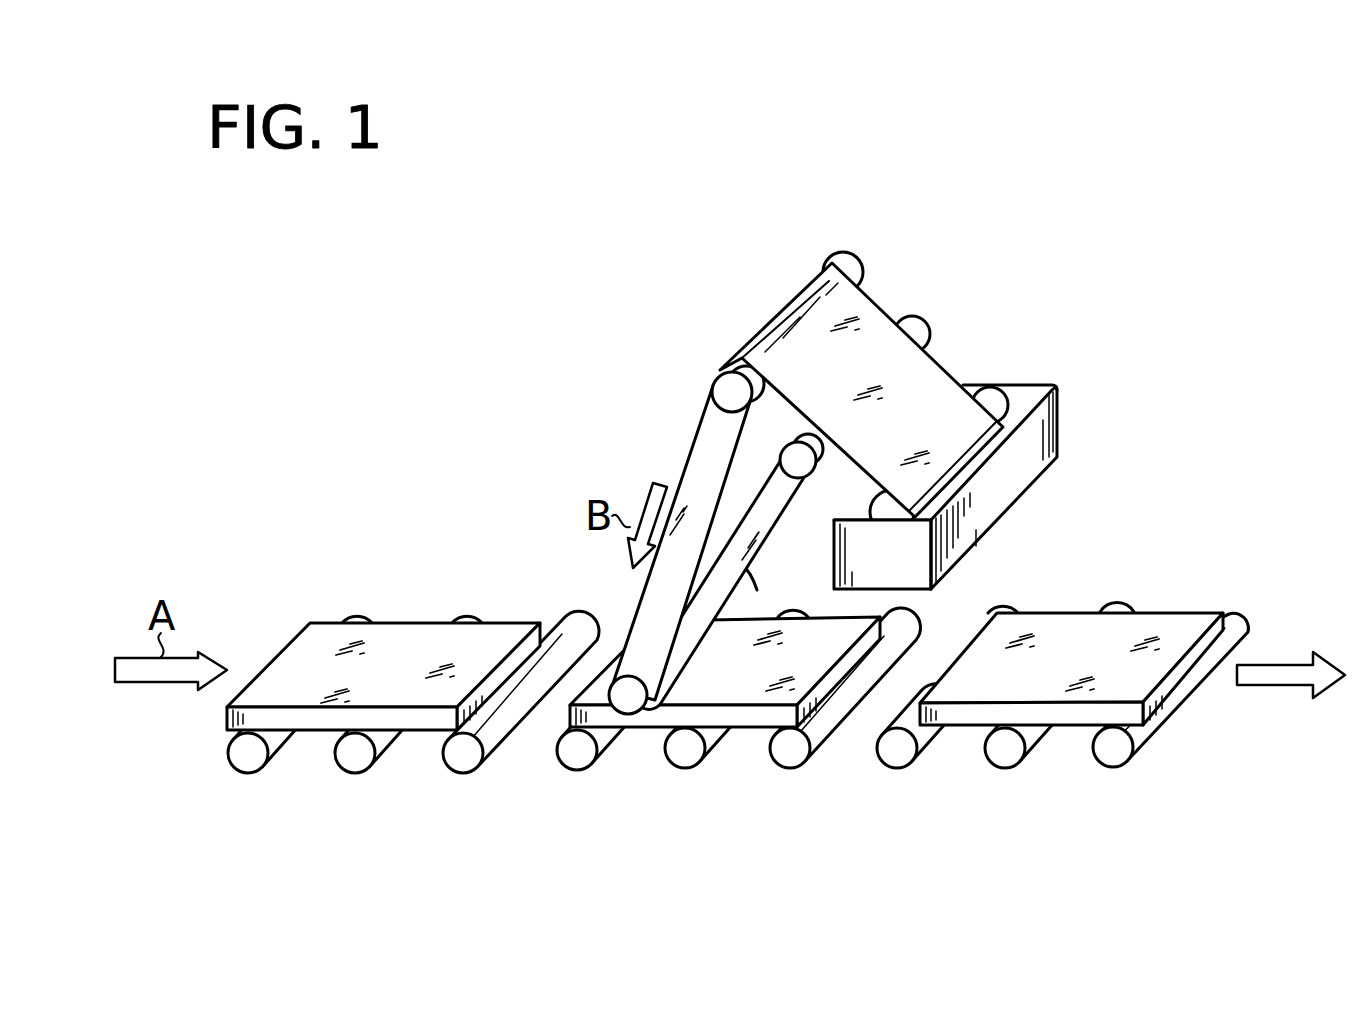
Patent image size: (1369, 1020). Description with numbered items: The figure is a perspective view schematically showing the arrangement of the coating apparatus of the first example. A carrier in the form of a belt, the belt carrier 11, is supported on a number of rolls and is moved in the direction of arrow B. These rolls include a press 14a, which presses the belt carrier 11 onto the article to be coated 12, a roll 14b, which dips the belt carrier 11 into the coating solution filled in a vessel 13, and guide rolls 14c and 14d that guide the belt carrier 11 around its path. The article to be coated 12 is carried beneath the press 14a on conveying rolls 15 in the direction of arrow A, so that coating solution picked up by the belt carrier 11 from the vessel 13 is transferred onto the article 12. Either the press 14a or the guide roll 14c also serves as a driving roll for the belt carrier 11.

The belt carrier 11 is at (657, 606).
The article to be coated 12 is at (313, 655).
The vessel 13 is at (1034, 422).
The press 14a is at (632, 703).
The roll 14b is at (995, 400).
The guide roll 14c is at (727, 388).
The guide roll 14d is at (793, 463).
The conveying rolls 15 is at (463, 757).